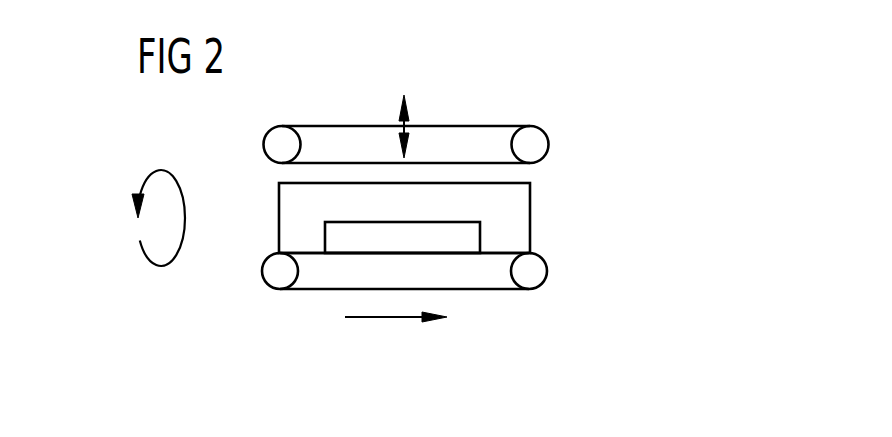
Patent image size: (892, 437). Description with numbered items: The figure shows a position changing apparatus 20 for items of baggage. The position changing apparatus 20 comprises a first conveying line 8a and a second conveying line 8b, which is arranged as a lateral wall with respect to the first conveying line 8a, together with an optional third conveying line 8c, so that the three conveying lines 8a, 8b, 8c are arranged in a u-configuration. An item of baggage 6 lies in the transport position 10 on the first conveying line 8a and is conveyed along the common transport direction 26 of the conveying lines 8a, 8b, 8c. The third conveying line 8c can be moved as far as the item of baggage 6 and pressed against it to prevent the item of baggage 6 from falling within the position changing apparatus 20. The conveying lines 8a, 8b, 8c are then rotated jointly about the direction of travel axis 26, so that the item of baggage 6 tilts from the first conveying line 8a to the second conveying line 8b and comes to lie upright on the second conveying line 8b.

The item of baggage 6 is at (342, 229).
The transport position 10 is at (333, 238).
The first conveying line 8a is at (556, 258).
The second conveying line 8b is at (556, 182).
The third conveying line 8c is at (556, 127).
The position changing apparatus 20 is at (436, 239).
The transport direction 26 is at (396, 318).